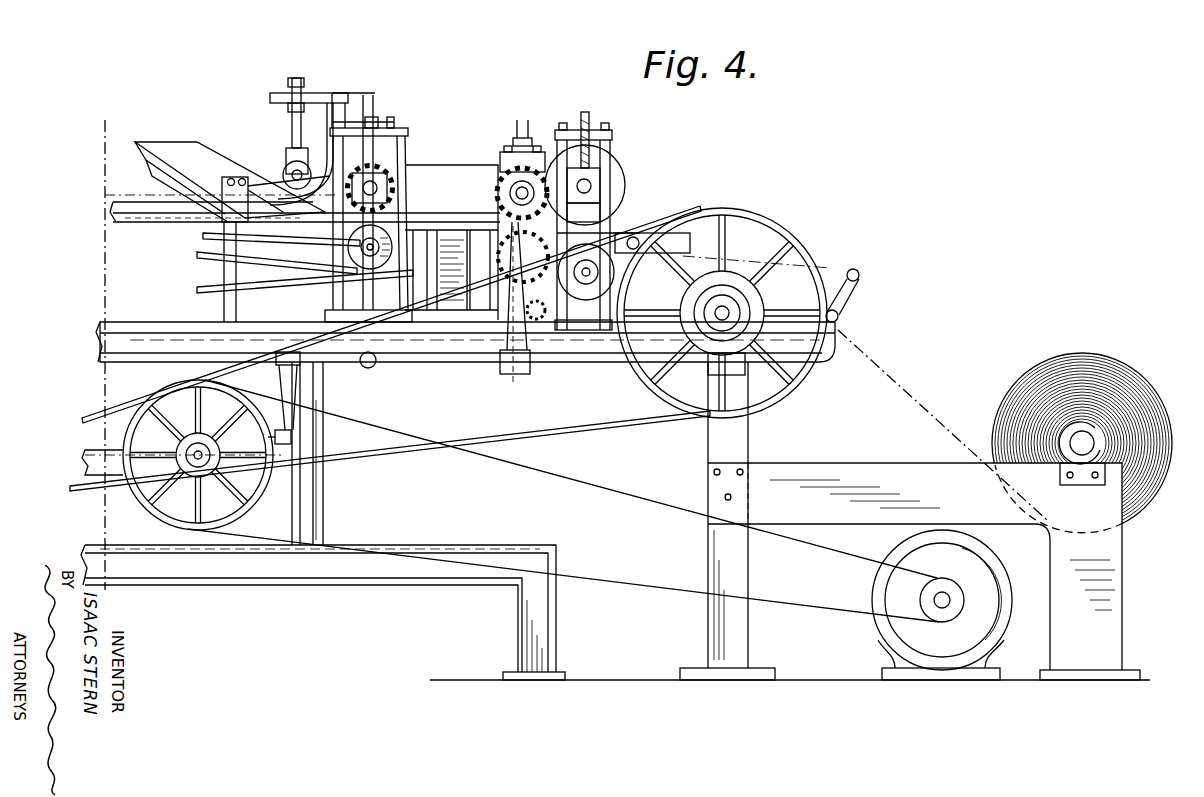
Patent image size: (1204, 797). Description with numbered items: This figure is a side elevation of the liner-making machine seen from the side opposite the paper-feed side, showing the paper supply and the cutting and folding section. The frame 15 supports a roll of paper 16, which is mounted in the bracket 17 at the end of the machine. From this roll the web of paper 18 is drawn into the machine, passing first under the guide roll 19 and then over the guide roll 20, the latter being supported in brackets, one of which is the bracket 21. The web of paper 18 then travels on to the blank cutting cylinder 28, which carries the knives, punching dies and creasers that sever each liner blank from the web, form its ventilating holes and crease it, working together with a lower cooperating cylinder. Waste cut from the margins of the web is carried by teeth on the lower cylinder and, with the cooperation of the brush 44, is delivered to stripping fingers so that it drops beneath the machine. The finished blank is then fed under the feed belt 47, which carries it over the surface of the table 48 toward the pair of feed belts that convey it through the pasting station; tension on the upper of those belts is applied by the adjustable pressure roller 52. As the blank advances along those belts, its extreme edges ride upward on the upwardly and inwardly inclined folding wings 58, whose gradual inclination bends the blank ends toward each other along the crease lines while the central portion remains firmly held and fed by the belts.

The frame 15 is at (877, 472).
The roll of paper 16 is at (1137, 387).
The bracket 17 is at (1062, 438).
The web of paper 18 is at (942, 425).
The guide roll 19 is at (843, 318).
The guide roll 20 is at (858, 270).
The bracket 21 is at (845, 297).
The blank cutting cylinder 28 is at (626, 175).
The brush 44 is at (534, 303).
The feed belt 47 is at (441, 163).
The table 48 is at (482, 221).
The adjustable pressure roller 52 is at (284, 171).
The folding wings 58 is at (187, 152).